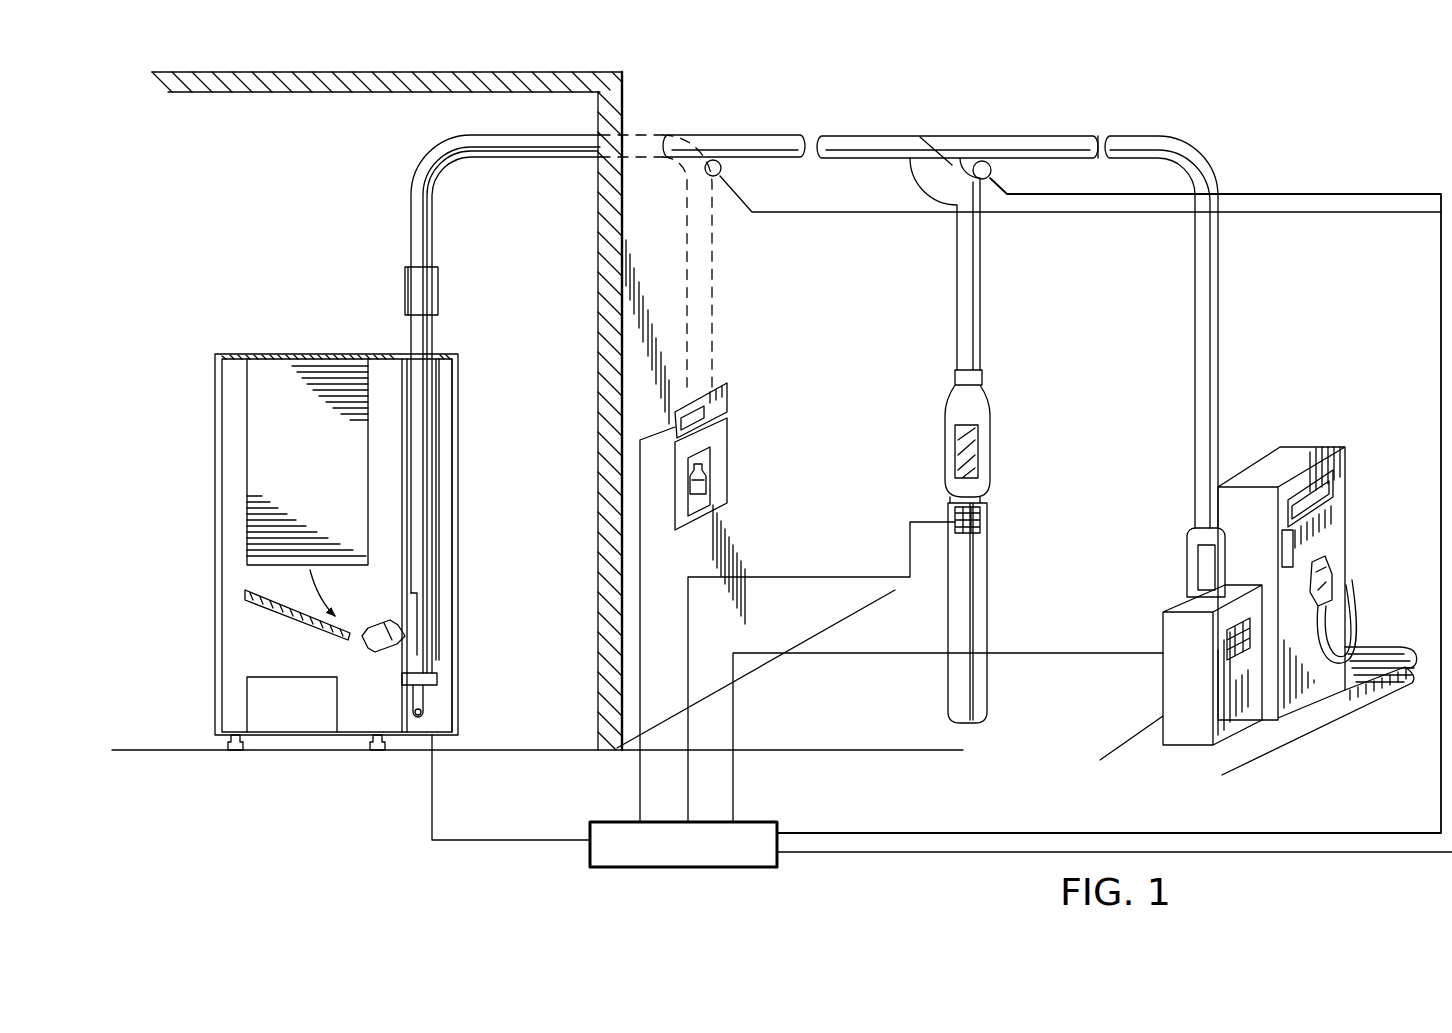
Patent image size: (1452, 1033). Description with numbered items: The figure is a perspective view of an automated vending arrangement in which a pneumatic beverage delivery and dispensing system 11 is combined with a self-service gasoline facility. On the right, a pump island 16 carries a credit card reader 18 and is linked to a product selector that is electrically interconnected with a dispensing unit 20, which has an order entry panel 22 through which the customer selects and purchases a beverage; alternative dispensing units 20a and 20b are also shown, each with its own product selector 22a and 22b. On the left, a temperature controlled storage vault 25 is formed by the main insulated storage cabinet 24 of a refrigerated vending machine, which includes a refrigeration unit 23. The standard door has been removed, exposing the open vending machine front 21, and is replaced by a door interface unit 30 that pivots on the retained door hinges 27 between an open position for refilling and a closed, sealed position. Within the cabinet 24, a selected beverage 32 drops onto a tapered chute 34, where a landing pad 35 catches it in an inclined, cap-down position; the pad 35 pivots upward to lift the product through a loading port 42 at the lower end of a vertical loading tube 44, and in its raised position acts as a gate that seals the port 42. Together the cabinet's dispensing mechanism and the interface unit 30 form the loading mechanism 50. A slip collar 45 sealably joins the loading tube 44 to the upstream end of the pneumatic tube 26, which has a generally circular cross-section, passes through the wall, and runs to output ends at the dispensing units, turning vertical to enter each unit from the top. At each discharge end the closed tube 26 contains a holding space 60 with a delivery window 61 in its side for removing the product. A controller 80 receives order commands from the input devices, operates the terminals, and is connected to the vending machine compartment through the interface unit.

The pneumatic food or beverage delivery and dispensing system 11 is at (880, 130).
The pump island 16 is at (1328, 440).
The credit card reader 18 is at (1283, 548).
The dispensing unit 20 is at (1158, 624).
The dispensing unit 20a is at (1005, 512).
The dispensing unit 20b is at (742, 497).
The open vending machine front 21 is at (405, 513).
The order entry panel 22 is at (1224, 650).
The product selector 22a is at (985, 530).
The product selector 22b is at (690, 402).
The refrigeration unit 23 is at (295, 710).
The storage cabinet 24 is at (232, 472).
The temperature controlled storage vault 25 is at (277, 352).
The pneumatic tube 26 is at (748, 135).
The door hinges 27 is at (392, 350).
The door interface unit 30 is at (458, 352).
The beverage 32 is at (698, 525).
The tapered chute 34 is at (280, 616).
The landing pad 35 is at (378, 648).
The loading port 42 is at (418, 612).
The loading tube 44 is at (435, 418).
The slip collar 45 is at (440, 283).
The loading mechanism 50 is at (440, 594).
The holding space 60 is at (714, 456).
The delivery window 61 is at (962, 455).
The controller 80 is at (760, 822).